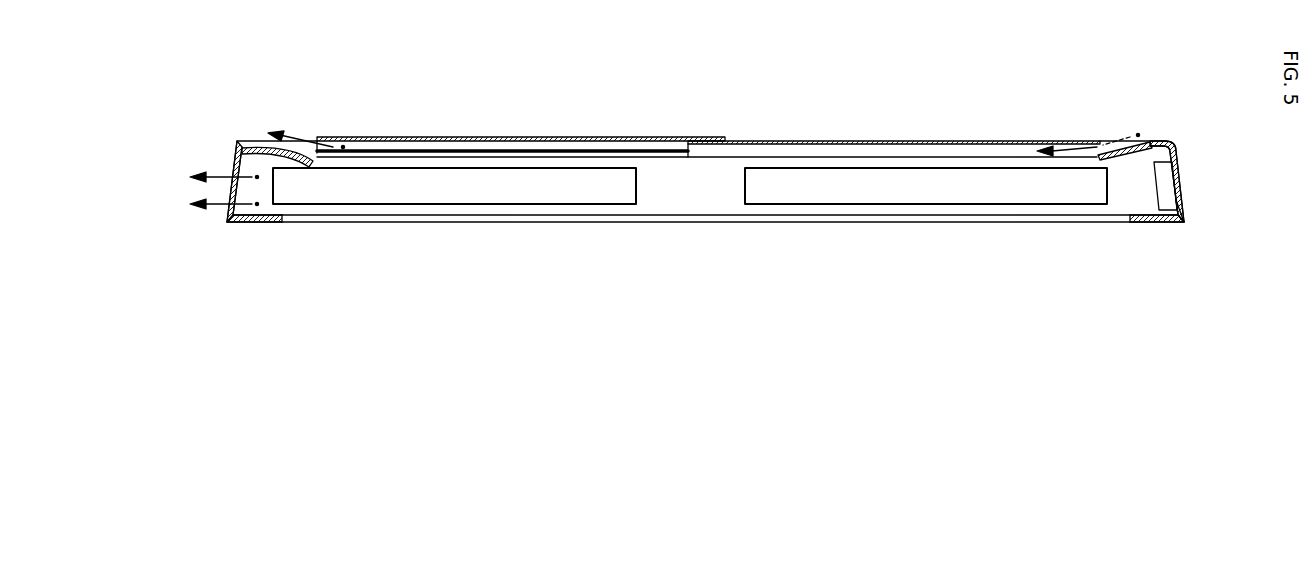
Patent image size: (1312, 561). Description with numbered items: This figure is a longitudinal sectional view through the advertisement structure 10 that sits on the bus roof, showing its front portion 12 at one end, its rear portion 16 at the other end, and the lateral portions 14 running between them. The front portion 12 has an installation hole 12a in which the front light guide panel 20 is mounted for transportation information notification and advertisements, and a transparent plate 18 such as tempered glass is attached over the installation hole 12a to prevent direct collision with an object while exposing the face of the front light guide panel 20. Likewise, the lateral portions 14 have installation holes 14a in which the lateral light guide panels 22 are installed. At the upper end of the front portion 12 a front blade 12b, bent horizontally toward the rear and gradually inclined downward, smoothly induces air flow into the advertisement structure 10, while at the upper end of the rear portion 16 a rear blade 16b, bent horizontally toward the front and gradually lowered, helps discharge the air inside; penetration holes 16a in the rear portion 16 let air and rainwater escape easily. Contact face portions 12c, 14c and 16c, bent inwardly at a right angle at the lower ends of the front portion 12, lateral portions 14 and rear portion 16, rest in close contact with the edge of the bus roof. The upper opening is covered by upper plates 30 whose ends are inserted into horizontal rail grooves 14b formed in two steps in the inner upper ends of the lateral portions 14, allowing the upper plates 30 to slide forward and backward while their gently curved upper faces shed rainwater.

The advertisement structure 10 is at (288, 120).
The front portion 12 is at (1144, 172).
The installation hole 12a is at (1185, 216).
The front blade 12b is at (1148, 140).
The contact face portion 12c is at (1138, 224).
The lateral portions 14 is at (707, 120).
The installation holes 14a is at (635, 188).
The horizontal rail grooves 14b is at (540, 153).
The contact face portion 14c is at (718, 216).
The rear portion 16 is at (254, 206).
The penetration holes 16a is at (227, 207).
The rear blade 16b is at (287, 160).
The contact face portion 16c is at (261, 224).
The transparent plate 18 is at (1182, 182).
The front light guide panel 20 is at (1165, 196).
The lateral light guide panels 22 is at (447, 187).
The upper plates 30 is at (770, 140).